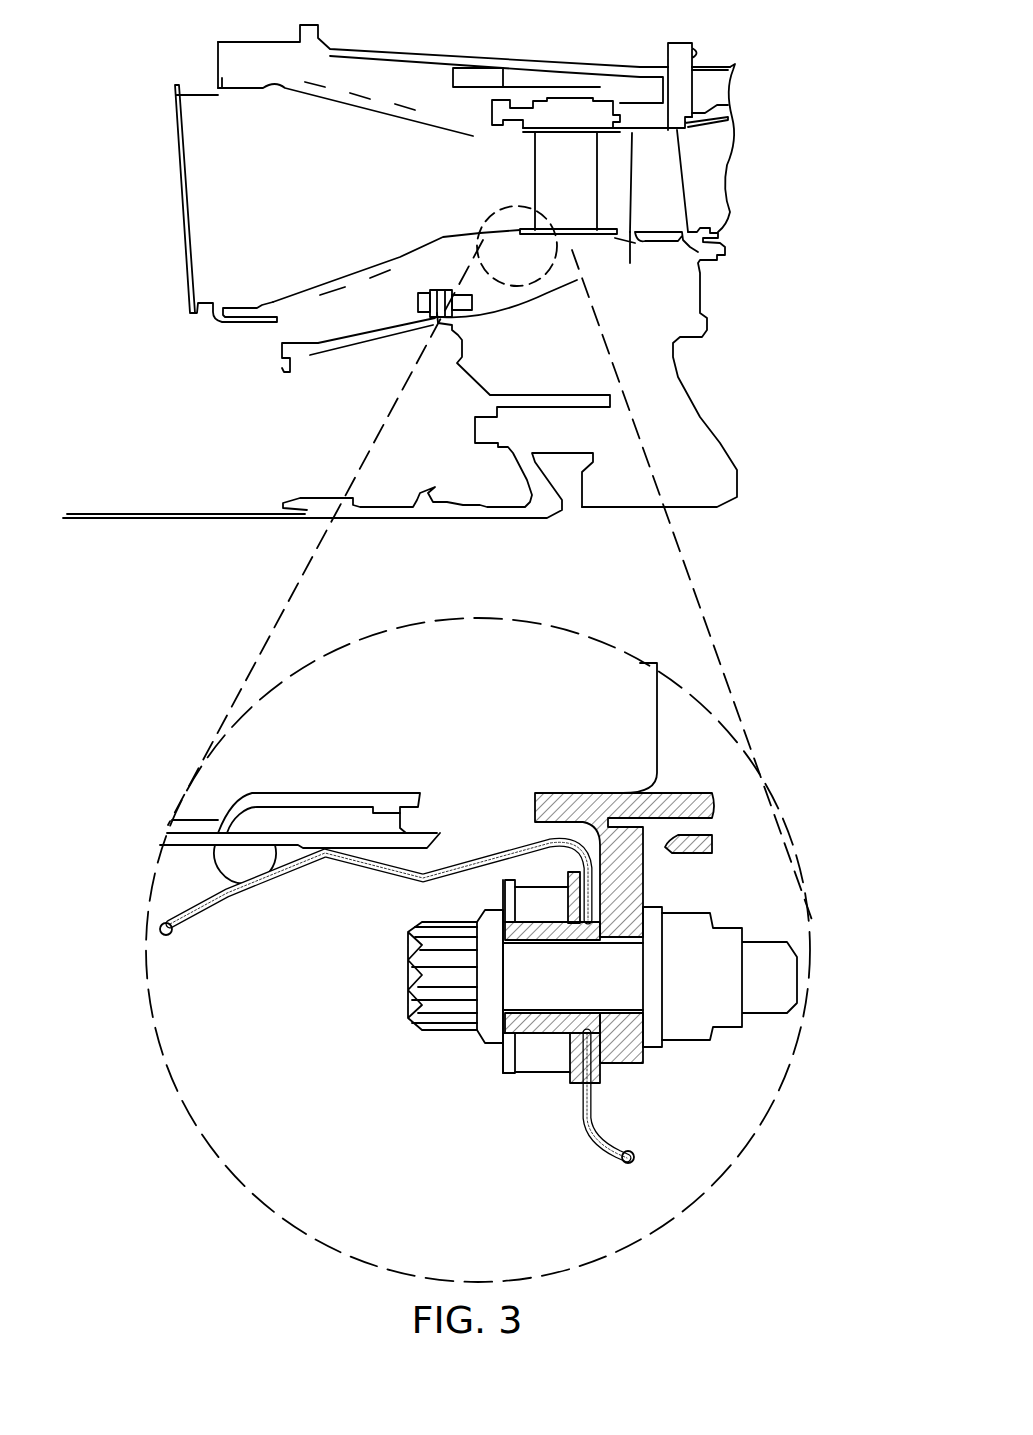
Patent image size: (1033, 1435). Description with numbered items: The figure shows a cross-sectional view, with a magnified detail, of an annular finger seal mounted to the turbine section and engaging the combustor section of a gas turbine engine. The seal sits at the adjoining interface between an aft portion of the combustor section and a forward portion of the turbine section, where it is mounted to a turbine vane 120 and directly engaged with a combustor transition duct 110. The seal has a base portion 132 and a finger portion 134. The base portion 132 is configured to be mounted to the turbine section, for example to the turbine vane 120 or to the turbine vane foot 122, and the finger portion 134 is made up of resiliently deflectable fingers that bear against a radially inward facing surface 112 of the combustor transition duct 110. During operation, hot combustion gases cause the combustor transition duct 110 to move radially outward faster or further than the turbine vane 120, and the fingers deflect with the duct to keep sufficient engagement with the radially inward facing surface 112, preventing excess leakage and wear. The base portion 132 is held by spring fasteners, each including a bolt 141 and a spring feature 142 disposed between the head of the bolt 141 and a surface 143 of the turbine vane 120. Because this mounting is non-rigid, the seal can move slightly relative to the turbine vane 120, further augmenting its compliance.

The combustor transition duct 110 is at (258, 172).
The radially inward facing surface 112 is at (217, 837).
The turbine vane 120 is at (565, 160).
The turbine vane foot 122 is at (712, 835).
The base portion 132 is at (562, 1128).
The finger portion 134 is at (245, 918).
The bolt 141 is at (518, 985).
The spring feature 142 is at (537, 1068).
The surface 143 is at (573, 1072).